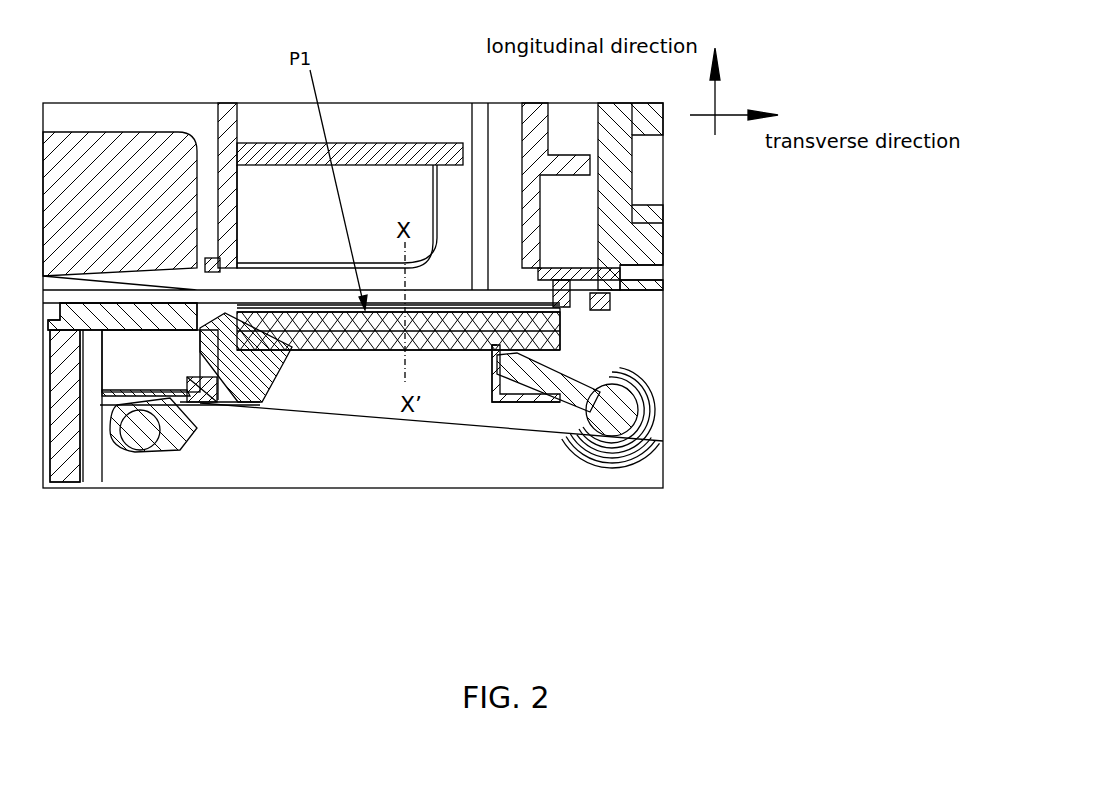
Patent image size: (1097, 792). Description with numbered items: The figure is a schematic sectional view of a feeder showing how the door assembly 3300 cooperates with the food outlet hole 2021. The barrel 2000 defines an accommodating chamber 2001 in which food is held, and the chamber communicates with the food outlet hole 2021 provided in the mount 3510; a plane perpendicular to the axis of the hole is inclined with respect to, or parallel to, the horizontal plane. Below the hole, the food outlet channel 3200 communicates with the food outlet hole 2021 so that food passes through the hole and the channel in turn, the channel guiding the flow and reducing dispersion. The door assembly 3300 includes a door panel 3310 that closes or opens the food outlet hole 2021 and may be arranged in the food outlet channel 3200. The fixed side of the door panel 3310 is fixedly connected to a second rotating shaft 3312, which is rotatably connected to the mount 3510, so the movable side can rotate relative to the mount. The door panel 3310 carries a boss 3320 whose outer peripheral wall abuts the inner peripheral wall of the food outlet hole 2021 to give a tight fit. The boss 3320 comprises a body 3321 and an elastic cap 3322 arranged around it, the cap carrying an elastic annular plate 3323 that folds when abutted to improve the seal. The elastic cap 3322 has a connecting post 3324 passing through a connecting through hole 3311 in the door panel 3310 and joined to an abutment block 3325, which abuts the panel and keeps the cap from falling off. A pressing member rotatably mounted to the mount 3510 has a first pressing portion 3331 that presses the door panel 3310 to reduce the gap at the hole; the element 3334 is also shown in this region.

The barrel 2000 is at (667, 202).
The accommodating chamber 2001 is at (455, 249).
The food outlet hole 2021 is at (426, 307).
The elastic annular plate 3323 is at (565, 303).
The elastic cap 3322 is at (570, 320).
The body 3321 is at (565, 343).
The boss 3320 is at (750, 292).
The connecting through hole 3311 is at (578, 362).
The door panel 3310 is at (572, 386).
The second rotating shaft 3312 is at (639, 428).
The connecting post 3324 is at (600, 446).
The abutment block 3325 is at (607, 440).
The food outlet channel 3200 is at (381, 447).
The roller 3334 is at (140, 432).
The first pressing portion 3331 is at (207, 405).
The mount 3510 is at (238, 407).
The door assembly 3300 is at (436, 367).